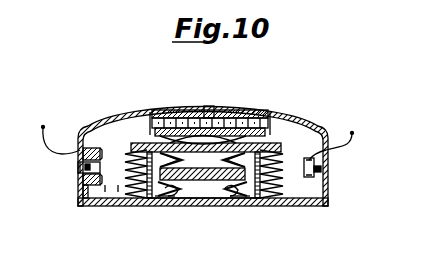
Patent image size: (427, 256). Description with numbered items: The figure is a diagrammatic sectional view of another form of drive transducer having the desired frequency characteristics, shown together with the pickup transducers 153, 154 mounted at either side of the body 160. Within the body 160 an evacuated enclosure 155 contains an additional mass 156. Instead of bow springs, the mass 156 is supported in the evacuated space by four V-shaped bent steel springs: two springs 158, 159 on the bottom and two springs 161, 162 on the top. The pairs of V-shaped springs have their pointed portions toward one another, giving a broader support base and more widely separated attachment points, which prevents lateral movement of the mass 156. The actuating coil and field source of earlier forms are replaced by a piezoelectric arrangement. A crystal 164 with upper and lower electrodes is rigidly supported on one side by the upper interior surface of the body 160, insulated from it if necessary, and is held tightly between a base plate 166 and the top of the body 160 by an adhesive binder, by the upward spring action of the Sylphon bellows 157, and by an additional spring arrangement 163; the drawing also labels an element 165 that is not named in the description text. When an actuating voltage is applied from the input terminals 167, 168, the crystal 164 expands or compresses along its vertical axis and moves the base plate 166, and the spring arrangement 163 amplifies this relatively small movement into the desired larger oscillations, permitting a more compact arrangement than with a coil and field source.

The pickup transducer 153 is at (79, 168).
The pickup transducer 154 is at (326, 183).
The evacuated enclosure 155 is at (230, 197).
The additional mass 156 is at (203, 183).
The Sylphon bellows 157 is at (292, 199).
The V-shaped bent steel spring 158 is at (167, 195).
The V-shaped bent steel spring 159 is at (247, 199).
The body 160 is at (310, 127).
The V-shaped bent steel spring 161 is at (197, 117).
The V-shaped bent steel spring 162 is at (208, 117).
The spring arrangement 163 is at (177, 116).
The piezoelectric crystal 164 is at (152, 116).
The cell row 165 is at (210, 123).
The base plate 166 is at (257, 116).
The input terminal 167 is at (272, 127).
The input terminal 168 is at (142, 119).